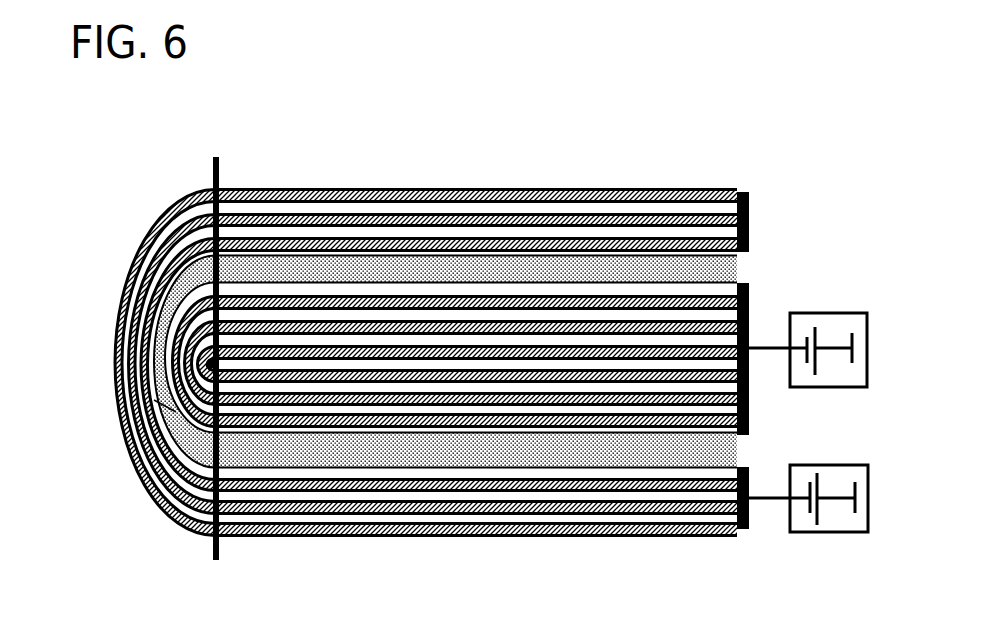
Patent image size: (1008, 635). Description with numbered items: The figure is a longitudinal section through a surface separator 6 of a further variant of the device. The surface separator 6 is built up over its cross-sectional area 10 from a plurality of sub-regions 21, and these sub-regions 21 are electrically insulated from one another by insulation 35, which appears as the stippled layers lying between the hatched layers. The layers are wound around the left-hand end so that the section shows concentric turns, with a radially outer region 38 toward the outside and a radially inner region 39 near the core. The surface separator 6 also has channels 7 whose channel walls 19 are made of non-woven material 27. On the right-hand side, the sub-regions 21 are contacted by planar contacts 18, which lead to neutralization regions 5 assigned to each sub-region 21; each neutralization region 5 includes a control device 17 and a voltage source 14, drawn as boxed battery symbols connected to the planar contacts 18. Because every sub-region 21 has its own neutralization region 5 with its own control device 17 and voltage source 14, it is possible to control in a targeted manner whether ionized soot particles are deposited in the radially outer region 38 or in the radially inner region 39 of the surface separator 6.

The surface separator 6 is at (337, 140).
The cross-sectional area 10 is at (157, 207).
The channel walls 19 is at (190, 193).
The channels 7 is at (135, 257).
The non-woven material 27 is at (120, 297).
The radially outer region 38 is at (113, 337).
The sub-regions 21 is at (115, 393).
The radially inner region 39 is at (120, 410).
The insulation 35 is at (585, 267).
The planar contacts 18 is at (750, 198).
The voltage sources 14 is at (800, 318).
The control devices 17 is at (835, 316).
The neutralization regions 5 is at (750, 407).